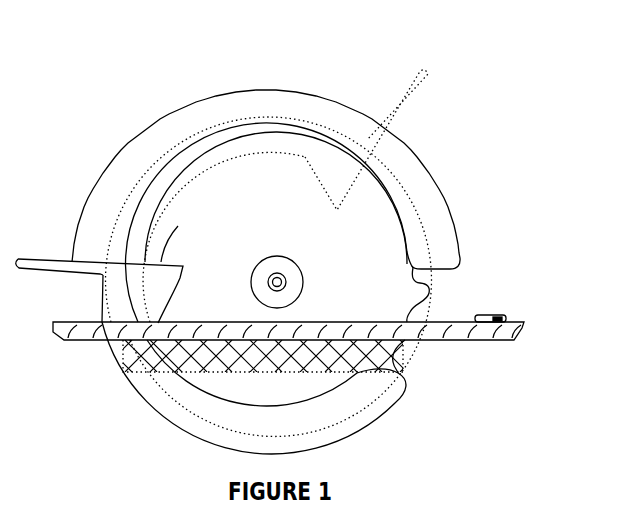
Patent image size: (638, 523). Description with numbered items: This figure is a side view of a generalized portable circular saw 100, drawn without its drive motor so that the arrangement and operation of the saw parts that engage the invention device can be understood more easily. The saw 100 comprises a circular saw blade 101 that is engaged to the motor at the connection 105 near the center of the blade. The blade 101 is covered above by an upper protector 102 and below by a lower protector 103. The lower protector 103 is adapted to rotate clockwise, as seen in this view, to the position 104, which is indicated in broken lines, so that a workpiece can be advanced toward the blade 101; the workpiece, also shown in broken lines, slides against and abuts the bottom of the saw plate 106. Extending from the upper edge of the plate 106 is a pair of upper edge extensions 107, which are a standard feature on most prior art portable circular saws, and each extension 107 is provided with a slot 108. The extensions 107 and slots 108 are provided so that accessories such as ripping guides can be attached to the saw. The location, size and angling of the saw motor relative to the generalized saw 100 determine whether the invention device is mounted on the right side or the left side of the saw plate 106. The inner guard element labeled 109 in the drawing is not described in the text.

The portable circular saw 100 is at (494, 177).
The saw blade 101 is at (434, 297).
The upper protector 102 is at (187, 123).
The lower protector 103 is at (165, 408).
The rotated position of lower protector 104 is at (390, 115).
The motor connection 105 is at (304, 283).
The saw plate 106 is at (389, 328).
The upper edge extensions 107 is at (500, 310).
The slots 108 is at (497, 318).
The inner guard 109 is at (196, 198).